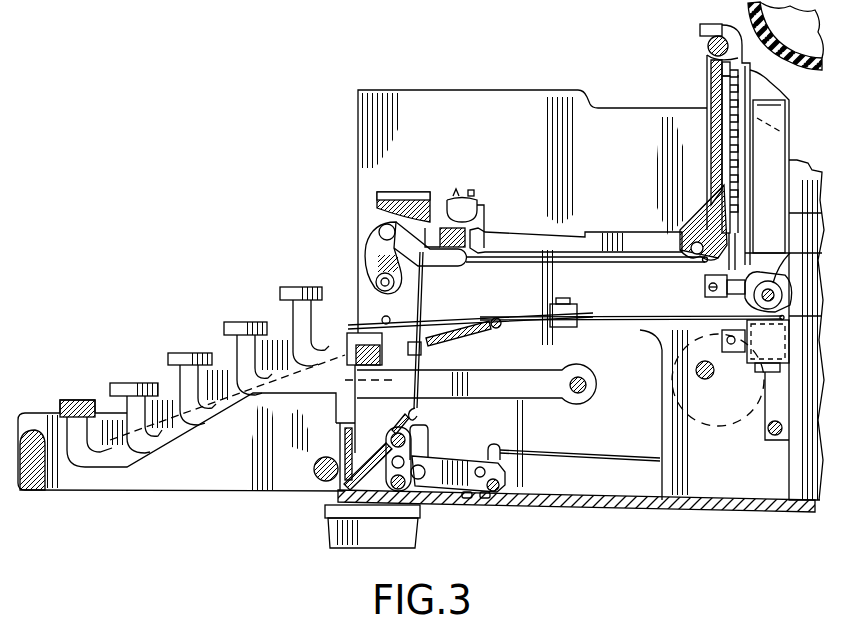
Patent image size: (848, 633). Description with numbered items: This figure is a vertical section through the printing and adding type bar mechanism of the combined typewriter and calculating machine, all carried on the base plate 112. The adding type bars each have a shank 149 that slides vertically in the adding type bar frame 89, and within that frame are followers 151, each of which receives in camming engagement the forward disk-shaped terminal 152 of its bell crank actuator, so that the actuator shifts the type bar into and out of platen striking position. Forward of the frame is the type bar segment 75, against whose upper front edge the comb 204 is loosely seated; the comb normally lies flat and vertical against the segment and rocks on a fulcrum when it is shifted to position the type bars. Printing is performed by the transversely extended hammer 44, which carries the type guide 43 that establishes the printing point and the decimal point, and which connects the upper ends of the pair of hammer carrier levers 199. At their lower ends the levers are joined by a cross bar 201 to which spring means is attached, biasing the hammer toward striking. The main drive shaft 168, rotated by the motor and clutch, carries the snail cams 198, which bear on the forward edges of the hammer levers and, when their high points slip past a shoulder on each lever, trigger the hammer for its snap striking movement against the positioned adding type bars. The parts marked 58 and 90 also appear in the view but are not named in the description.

The type guide 43 is at (703, 22).
The cover fragment 58 is at (750, 14).
The hammer member 44 is at (708, 44).
The comb 204 is at (714, 101).
The shank 149 is at (722, 126).
The type bar segment 75 is at (708, 192).
The arm 90 is at (796, 260).
The adding type bar frame 89 is at (781, 286).
The main drive shaft 168 is at (707, 360).
The disk-shaped terminal 152 is at (728, 384).
The snail cams 198 is at (745, 405).
The followers 151 is at (768, 372).
The hammer carrier levers 199 is at (763, 380).
The cross bar 201 is at (776, 440).
The base plate 112 is at (606, 510).